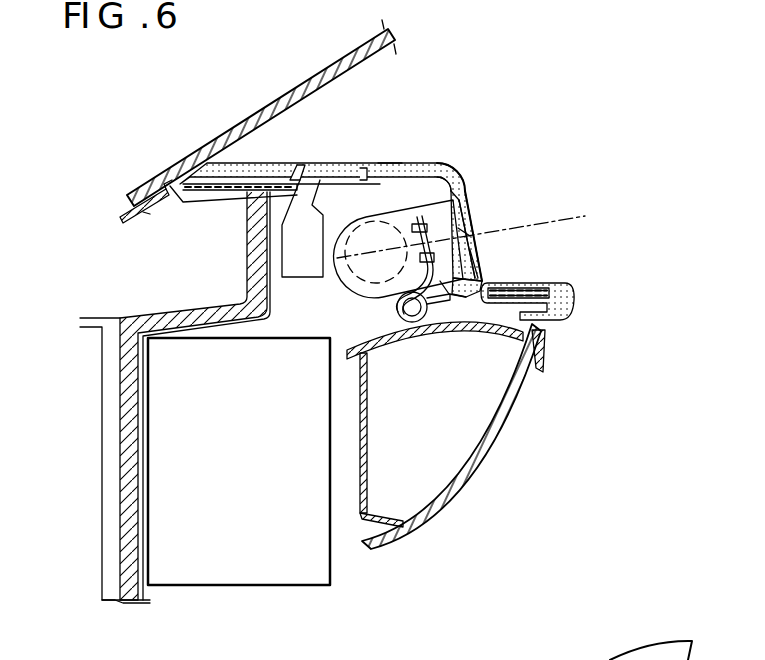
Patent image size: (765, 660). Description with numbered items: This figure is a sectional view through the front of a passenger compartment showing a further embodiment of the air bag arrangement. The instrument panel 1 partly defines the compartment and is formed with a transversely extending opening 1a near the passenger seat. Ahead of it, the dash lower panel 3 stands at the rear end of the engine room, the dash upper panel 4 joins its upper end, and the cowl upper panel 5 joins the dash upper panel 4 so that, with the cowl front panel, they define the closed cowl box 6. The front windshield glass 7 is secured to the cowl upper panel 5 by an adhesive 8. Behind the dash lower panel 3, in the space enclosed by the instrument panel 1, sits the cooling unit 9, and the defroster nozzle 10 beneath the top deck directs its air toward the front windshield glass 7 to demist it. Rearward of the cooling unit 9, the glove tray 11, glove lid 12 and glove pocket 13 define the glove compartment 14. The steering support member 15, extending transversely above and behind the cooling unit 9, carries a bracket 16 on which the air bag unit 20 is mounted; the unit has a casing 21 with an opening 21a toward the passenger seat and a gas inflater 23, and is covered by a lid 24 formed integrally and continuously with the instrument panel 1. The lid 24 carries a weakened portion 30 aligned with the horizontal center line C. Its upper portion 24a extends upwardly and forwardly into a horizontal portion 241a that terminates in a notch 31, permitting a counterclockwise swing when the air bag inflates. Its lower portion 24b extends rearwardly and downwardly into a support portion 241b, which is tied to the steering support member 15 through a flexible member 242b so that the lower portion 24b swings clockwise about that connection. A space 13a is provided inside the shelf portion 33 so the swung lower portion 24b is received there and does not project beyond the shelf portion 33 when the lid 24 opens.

The instrument panel 1 is at (345, 162).
The opening 1a is at (490, 274).
The dash lower panel 3 is at (123, 440).
The dash upper panel 4 is at (247, 280).
The cowl upper panel 5 is at (207, 193).
The cowl box 6 is at (152, 266).
The front windshield glass 7 is at (203, 149).
The adhesive 8 is at (154, 187).
The cooling unit 9 is at (150, 440).
The defroster nozzle 10 is at (322, 230).
The glove tray 11 is at (367, 447).
The glove lid 12 is at (477, 467).
The glove pocket 13 is at (455, 424).
The space 13a is at (477, 290).
The glove compartment 14 is at (357, 510).
The steering support member 15 is at (403, 328).
The bracket 16 is at (400, 256).
The air bag unit 20 is at (407, 207).
The casing 21 is at (453, 187).
The opening 21a is at (470, 197).
The gas inflater 23 is at (347, 278).
The lid 24 is at (474, 209).
The upper portion 24a is at (475, 190).
The lower portion 24b is at (478, 250).
The weakened portion 30 is at (468, 233).
The notch 31 is at (371, 168).
The shelf portion 33 is at (555, 282).
The horizontal portion 241a is at (391, 163).
The support portion 241b is at (540, 358).
The flexible member 242b is at (450, 302).
The horizontal center line C is at (475, 237).